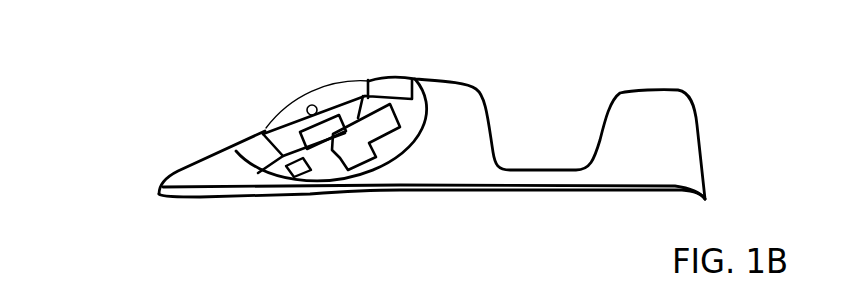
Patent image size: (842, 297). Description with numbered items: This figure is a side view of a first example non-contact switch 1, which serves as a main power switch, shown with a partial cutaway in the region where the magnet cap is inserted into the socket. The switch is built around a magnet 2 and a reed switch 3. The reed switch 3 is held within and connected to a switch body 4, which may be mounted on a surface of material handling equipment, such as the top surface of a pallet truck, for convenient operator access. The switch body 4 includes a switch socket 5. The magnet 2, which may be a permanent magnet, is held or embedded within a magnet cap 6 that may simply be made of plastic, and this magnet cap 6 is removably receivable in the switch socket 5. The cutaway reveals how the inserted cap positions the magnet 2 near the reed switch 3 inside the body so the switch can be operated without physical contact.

The non-contact switch 1 is at (134, 69).
The magnet 2 is at (327, 133).
The reed switch 3 is at (356, 152).
The switch body 4 is at (157, 204).
The switch socket 5 is at (281, 165).
The magnet cap 6 is at (263, 120).